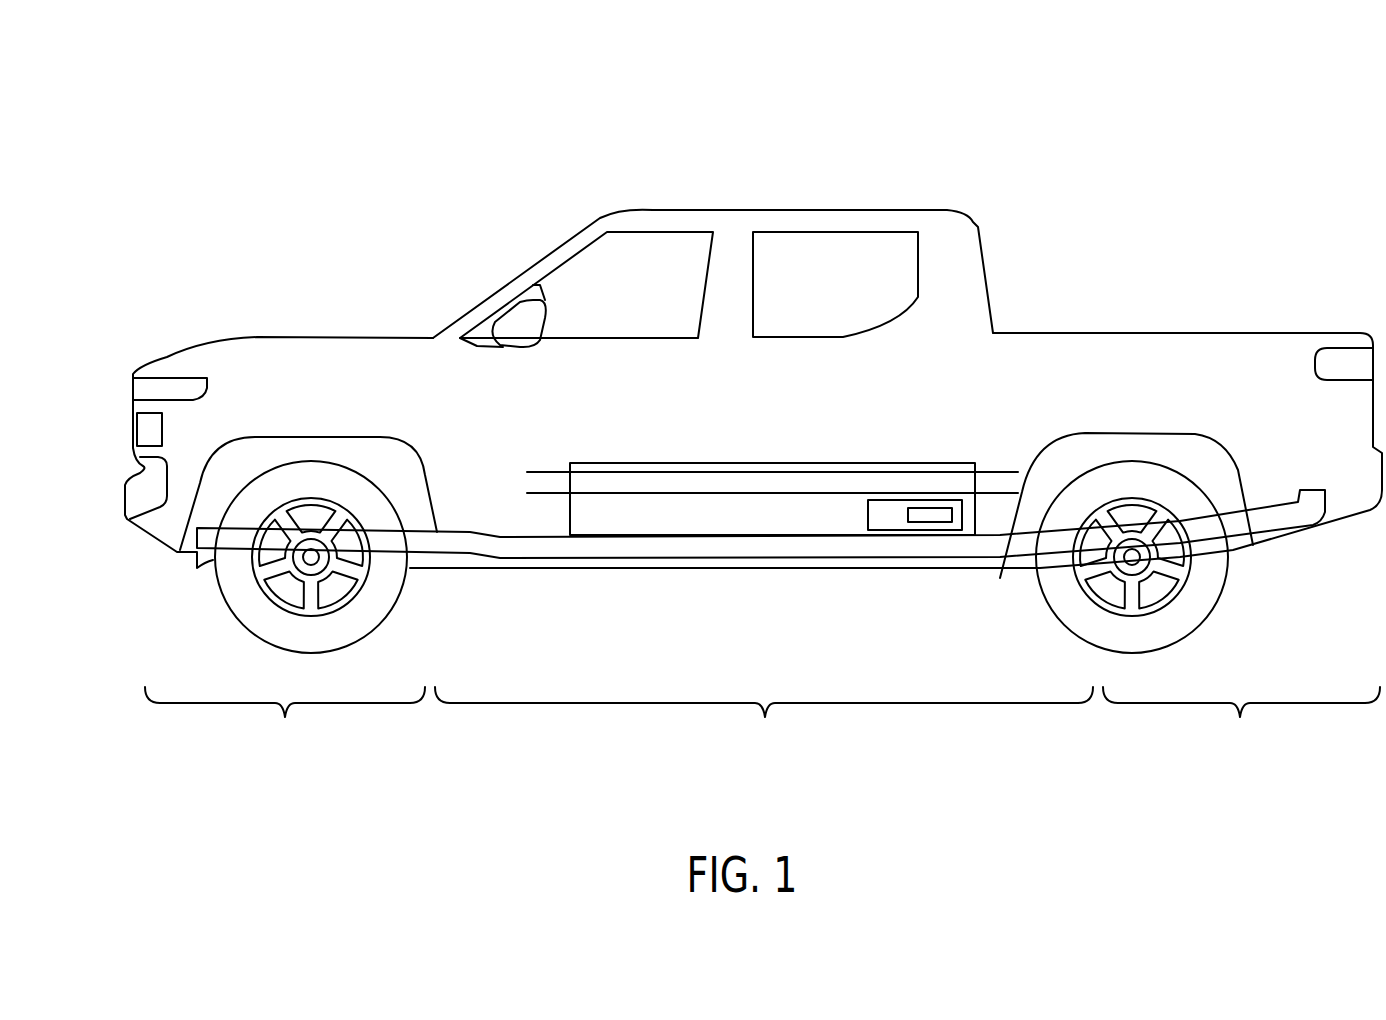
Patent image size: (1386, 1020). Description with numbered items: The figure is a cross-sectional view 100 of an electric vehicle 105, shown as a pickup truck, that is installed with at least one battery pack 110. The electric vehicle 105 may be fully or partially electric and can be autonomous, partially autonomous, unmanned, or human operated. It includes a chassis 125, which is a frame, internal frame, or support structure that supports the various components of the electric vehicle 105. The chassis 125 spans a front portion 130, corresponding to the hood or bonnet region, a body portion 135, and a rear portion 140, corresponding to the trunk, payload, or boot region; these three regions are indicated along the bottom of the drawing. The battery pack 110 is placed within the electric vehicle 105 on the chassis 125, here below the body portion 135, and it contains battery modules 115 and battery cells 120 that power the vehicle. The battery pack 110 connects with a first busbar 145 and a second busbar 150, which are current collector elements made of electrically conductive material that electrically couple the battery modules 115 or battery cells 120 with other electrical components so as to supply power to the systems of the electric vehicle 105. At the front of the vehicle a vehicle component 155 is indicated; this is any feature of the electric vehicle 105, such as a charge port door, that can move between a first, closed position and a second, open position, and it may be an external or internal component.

The cross-sectional view 100 is at (347, 116).
The electric vehicle 105 is at (672, 186).
The battery pack 110 is at (782, 443).
The battery module 115 is at (953, 530).
The battery cell 120 is at (930, 524).
The chassis 125 is at (456, 511).
The front portion 130 is at (291, 602).
The body portion 135 is at (764, 560).
The rear portion 140 is at (1190, 600).
The first busbar 145 is at (650, 458).
The second busbar 150 is at (604, 484).
The vehicle component 155 is at (133, 402).